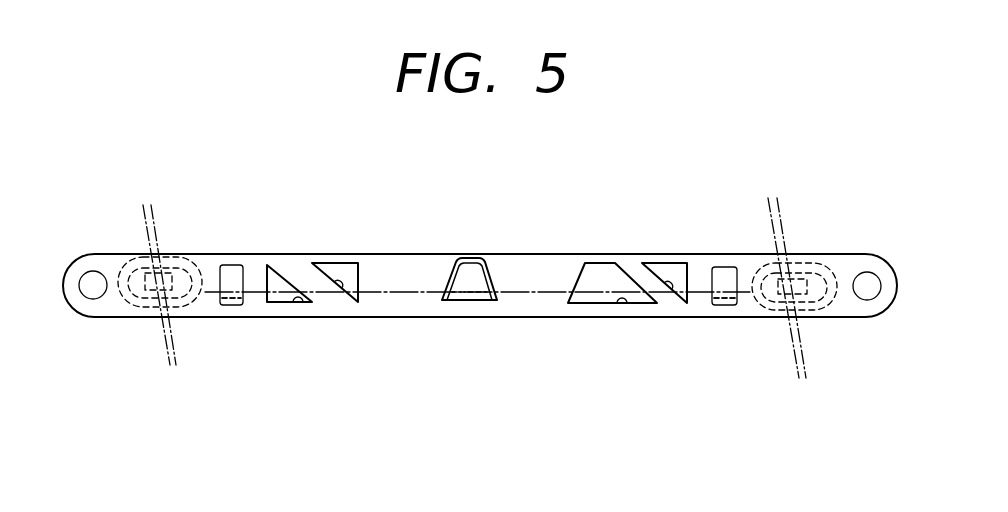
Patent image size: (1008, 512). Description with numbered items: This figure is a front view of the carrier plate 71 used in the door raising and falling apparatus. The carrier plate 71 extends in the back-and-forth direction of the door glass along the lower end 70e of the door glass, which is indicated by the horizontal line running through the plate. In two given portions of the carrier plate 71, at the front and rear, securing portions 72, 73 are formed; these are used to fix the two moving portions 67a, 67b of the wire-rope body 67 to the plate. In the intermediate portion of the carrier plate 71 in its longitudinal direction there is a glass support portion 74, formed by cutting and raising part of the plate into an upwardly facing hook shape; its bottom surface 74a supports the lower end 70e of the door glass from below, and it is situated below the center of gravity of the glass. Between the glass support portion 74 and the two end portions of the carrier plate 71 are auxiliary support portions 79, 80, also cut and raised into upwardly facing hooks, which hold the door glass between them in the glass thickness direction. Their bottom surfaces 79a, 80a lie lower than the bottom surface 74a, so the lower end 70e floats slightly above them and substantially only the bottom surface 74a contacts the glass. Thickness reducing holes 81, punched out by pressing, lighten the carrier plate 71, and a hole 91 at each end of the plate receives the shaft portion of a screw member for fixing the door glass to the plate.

The carrier plate 71 is at (543, 254).
The lower end of the door glass 70e is at (402, 292).
The hole 91 is at (92, 272).
The securing portion 73 is at (165, 262).
The securing portion 72 is at (806, 285).
The auxiliary support portion 80 is at (231, 267).
The bottom surface of the auxiliary support portion 80a is at (240, 298).
The auxiliary support portion 79 is at (724, 267).
The bottom surface of the auxiliary support portion 79a is at (713, 297).
The thickness reducing holes 81 is at (345, 295).
The glass support portion 74 is at (447, 280).
The bottom surface of the glass support portion 74a is at (494, 284).
The moving portion of the wire-rope body 67a is at (798, 332).
The moving portion of the wire-rope body 67b is at (165, 345).
The wire-rope body 67 is at (790, 353).